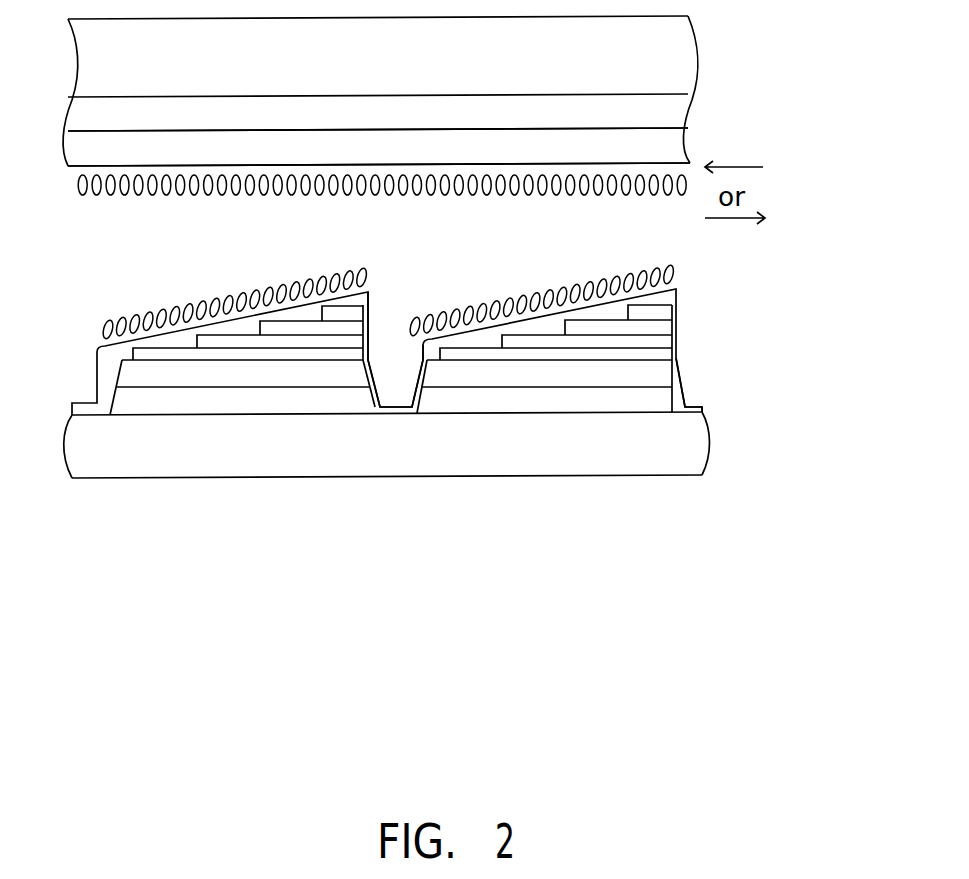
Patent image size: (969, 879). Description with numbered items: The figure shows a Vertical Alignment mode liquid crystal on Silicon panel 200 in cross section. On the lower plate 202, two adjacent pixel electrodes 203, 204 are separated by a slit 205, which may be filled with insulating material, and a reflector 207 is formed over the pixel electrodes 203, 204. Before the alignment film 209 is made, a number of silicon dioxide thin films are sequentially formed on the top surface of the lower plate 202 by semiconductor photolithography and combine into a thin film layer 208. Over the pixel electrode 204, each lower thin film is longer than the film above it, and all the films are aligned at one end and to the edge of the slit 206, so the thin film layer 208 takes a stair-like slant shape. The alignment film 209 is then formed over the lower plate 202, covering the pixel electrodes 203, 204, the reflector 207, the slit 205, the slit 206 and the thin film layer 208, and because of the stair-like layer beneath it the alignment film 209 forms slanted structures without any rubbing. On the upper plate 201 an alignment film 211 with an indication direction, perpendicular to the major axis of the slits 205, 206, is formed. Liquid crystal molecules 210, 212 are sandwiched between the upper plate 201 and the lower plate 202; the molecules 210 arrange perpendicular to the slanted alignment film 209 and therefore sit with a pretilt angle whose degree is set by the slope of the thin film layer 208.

The Vertical Alignment mode liquid crystal on Silicon panel 200 is at (773, 577).
The upper plate 201 is at (717, 15).
The lower plate 202 is at (455, 389).
The pixel electrode 203 is at (213, 402).
The pixel electrode 204 is at (662, 400).
The slit 205 is at (404, 394).
The slit 206 is at (704, 402).
The reflector 207 is at (663, 373).
The thin film layer 208 is at (683, 303).
The alignment film 209 is at (672, 297).
The liquid crystal molecules 210 is at (108, 333).
The alignment film 211 is at (82, 150).
The liquid crystal molecules 212 is at (83, 195).